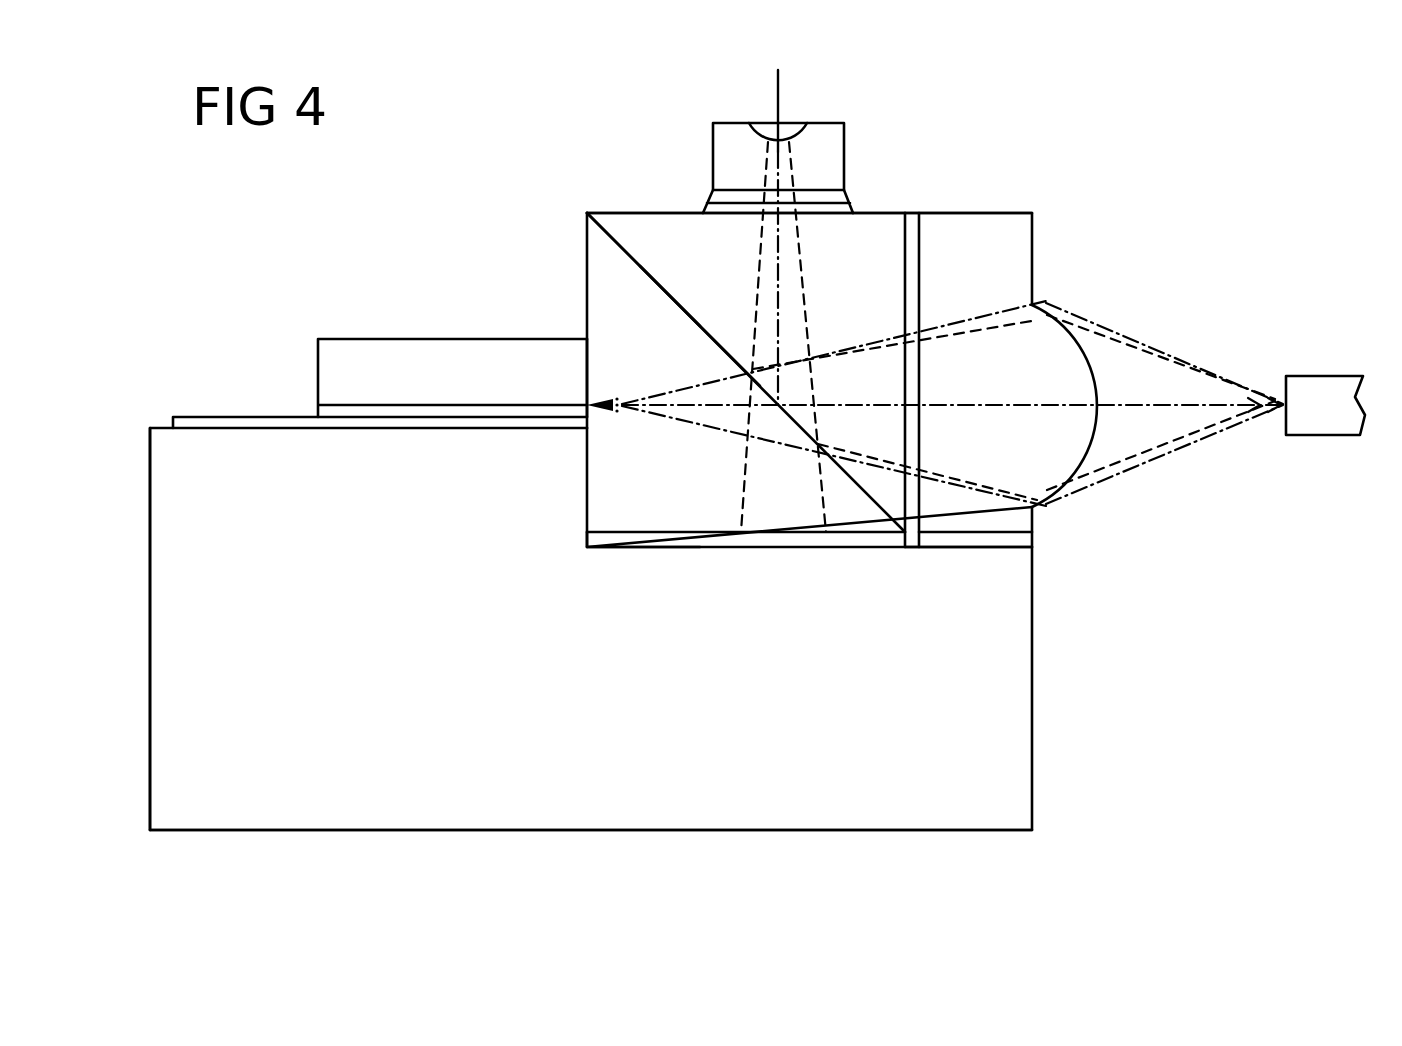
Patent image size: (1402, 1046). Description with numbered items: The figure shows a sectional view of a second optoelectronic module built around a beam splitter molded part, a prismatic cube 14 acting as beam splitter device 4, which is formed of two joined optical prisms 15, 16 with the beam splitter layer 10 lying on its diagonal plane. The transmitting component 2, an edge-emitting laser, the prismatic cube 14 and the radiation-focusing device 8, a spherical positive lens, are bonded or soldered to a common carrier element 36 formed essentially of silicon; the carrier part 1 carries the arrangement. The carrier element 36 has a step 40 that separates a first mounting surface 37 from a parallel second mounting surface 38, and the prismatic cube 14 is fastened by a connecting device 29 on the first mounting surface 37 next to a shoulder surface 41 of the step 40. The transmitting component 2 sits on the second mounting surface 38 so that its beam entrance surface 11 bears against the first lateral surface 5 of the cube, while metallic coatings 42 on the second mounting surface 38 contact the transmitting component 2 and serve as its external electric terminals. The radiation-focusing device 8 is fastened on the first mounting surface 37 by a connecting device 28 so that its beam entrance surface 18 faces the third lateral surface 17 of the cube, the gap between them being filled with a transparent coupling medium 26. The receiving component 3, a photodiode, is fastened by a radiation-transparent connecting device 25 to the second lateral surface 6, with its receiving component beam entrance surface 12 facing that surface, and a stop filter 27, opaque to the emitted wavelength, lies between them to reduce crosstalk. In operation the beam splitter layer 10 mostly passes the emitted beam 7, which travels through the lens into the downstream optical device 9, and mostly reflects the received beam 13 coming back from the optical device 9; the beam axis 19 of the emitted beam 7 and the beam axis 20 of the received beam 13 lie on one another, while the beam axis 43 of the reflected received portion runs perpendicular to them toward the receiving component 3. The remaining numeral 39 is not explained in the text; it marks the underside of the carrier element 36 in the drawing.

The carrier part 1 is at (1020, 223).
The transmitting component 2 is at (347, 355).
The receiving component 3 is at (827, 125).
The beam splitter device 4 is at (617, 153).
The prismatic cube 14 is at (713, 282).
The first lateral surface 5 is at (586, 283).
The second lateral surface 6 is at (663, 212).
The emitted beam 7 is at (731, 436).
The radiation-focusing device 8 is at (1085, 351).
The optical device 9 is at (1335, 382).
The beam splitter layer 10 is at (663, 290).
The transmitting component beam entrance surface 11 is at (586, 375).
The receiving component beam entrance surface 12 is at (823, 193).
The received beam 13 is at (1164, 450).
The optical prism 15 is at (871, 238).
The optical prism 16 is at (594, 243).
The third lateral surface 17 is at (903, 267).
The beam entrance surface 18 is at (920, 287).
The beam axis 19 is at (1165, 403).
The beam axis 20 is at (952, 345).
The connecting device 25 is at (733, 213).
The transparent coupling medium 26 is at (913, 213).
The stop filter 27 is at (708, 199).
The connecting device 28 is at (980, 540).
The connecting device 29 is at (788, 539).
The carrier element 36 is at (643, 773).
The first mounting surface 37 is at (938, 547).
The second mounting surface 38 is at (162, 428).
The underside 39 is at (849, 830).
The step 40 is at (550, 585).
The shoulder surface 41 is at (586, 490).
The metallic coatings 42 is at (212, 418).
The beam axis 43 is at (773, 107).